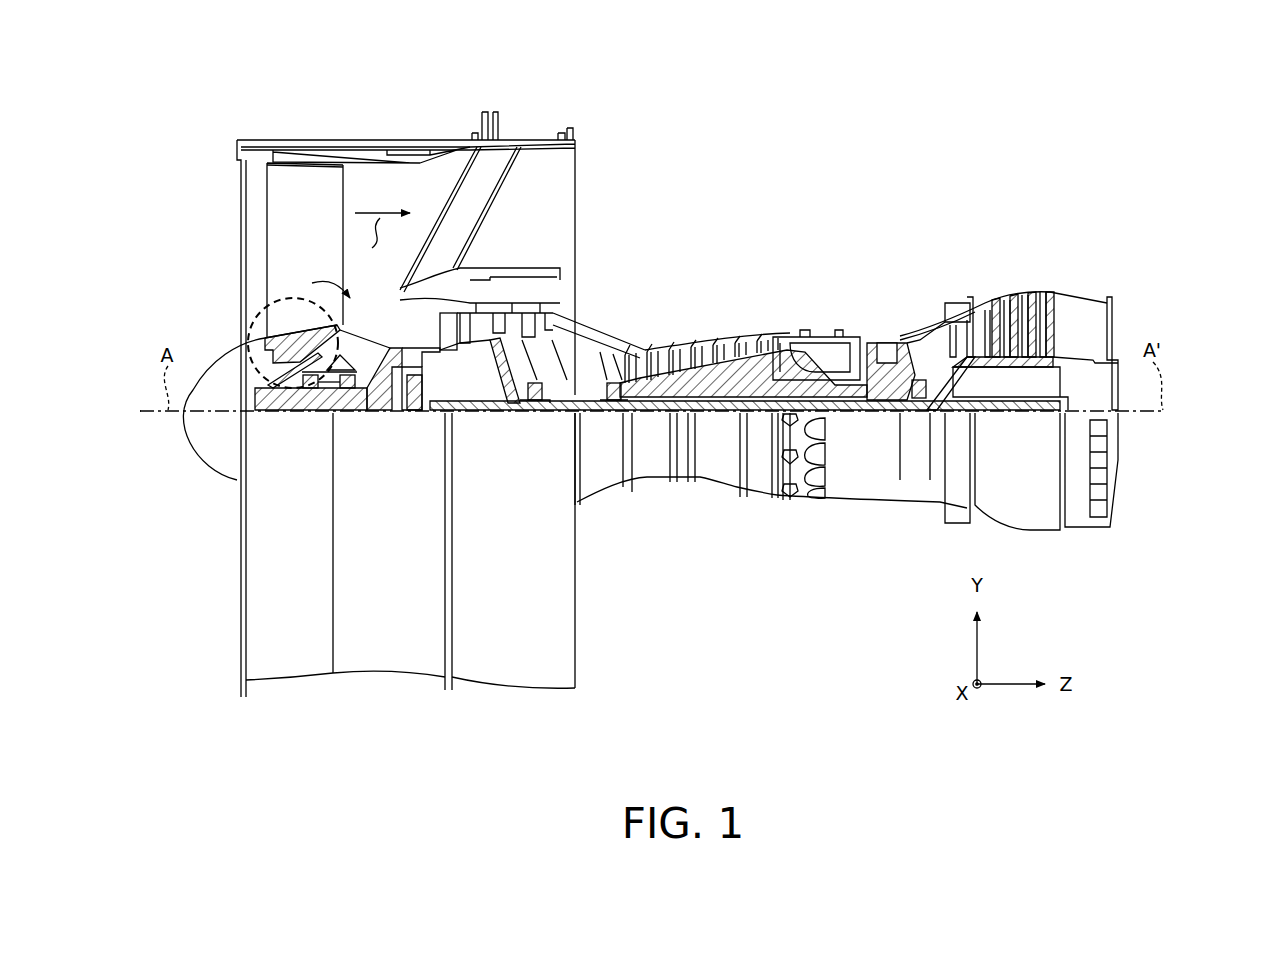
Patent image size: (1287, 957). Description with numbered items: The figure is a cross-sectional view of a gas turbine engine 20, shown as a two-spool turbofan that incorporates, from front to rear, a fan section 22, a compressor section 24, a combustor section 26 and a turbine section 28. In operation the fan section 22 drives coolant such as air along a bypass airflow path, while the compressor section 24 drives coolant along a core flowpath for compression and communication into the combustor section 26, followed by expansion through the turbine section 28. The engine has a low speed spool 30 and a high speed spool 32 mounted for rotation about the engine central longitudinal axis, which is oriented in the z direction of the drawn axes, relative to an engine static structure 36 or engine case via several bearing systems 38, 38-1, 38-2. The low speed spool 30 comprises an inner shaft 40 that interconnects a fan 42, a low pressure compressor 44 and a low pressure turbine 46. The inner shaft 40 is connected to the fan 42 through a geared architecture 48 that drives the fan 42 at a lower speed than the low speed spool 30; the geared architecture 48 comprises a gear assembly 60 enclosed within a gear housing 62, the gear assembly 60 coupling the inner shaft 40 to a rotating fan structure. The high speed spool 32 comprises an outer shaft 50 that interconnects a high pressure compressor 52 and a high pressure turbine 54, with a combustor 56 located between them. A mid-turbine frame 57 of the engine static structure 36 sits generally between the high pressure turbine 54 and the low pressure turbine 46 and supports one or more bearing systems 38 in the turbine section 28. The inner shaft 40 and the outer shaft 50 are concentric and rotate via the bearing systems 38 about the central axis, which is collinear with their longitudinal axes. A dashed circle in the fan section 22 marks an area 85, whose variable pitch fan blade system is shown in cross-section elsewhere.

The gas turbine engine 20 is at (866, 132).
The fan section 22 is at (427, 128).
The compressor section 24 is at (452, 238).
The combustor section 26 is at (779, 238).
The turbine section 28 is at (1060, 238).
The low speed spool 30 is at (723, 420).
The high speed spool 32 is at (778, 378).
The engine static structure 36 is at (758, 473).
The bearing system 38 is at (932, 417).
The bearing system 38-1 is at (335, 400).
The bearing system 38-2 is at (528, 412).
The inner shaft 40 is at (597, 418).
The fan 42 is at (305, 213).
The low pressure compressor 44 is at (518, 323).
The low pressure turbine 46 is at (1010, 300).
The geared architecture 48 is at (410, 440).
The outer shaft 50 is at (833, 413).
The high pressure compressor 52 is at (717, 348).
The high pressure turbine 54 is at (887, 343).
The combustor 56 is at (832, 352).
The mid-turbine frame 57 is at (935, 360).
The gear assembly 60 is at (430, 388).
The gear housing 62 is at (430, 368).
The area 85 is at (258, 318).